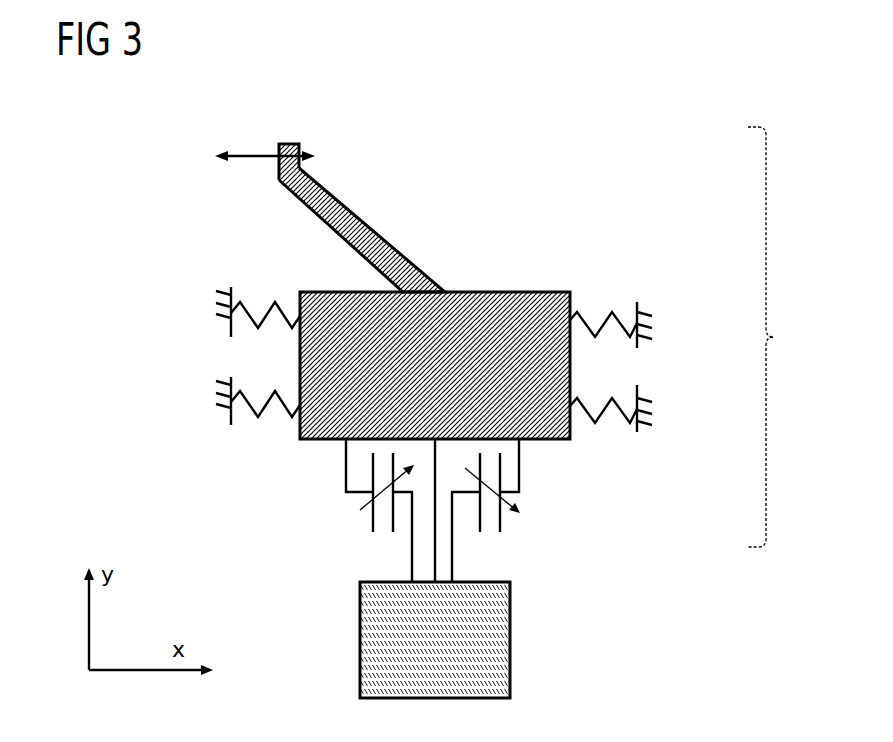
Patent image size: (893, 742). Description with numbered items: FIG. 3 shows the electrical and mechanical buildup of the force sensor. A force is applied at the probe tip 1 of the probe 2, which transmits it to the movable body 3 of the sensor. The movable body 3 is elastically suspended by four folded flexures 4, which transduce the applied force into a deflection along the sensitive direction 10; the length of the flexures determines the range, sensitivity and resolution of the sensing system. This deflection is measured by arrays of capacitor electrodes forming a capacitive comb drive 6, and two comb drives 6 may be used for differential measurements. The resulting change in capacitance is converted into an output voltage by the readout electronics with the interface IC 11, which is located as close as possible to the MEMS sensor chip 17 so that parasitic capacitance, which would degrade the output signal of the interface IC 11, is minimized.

The probe tip 1 is at (302, 152).
The probe 2 is at (402, 255).
The movable body 3 is at (518, 320).
The folded flexures 4 is at (612, 310).
The capacitive comb drive 6 is at (385, 510).
The sensitive direction 10 is at (250, 160).
The interface IC 11 is at (467, 660).
The MEMS sensor chip 17 is at (798, 337).